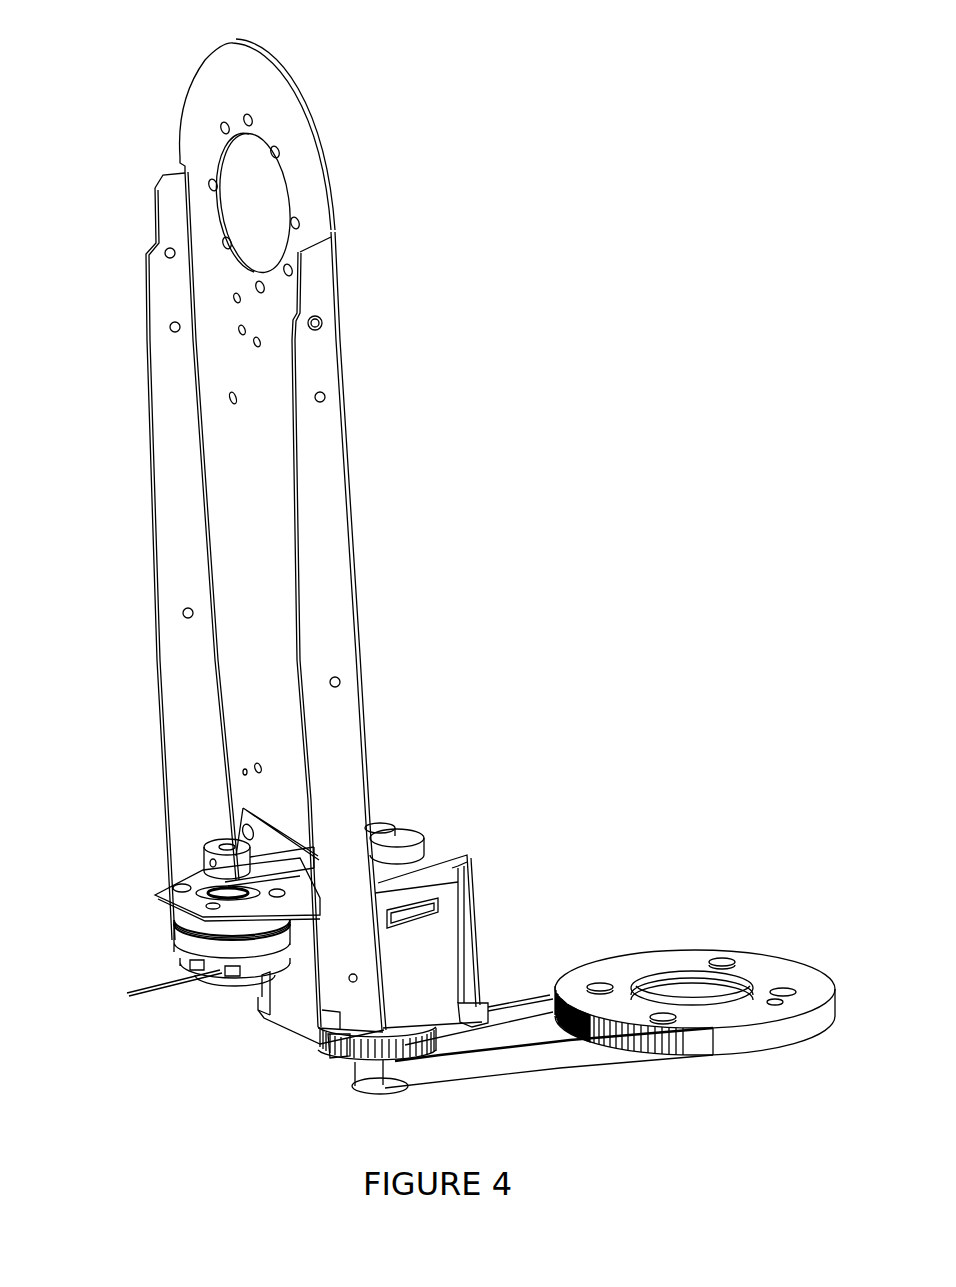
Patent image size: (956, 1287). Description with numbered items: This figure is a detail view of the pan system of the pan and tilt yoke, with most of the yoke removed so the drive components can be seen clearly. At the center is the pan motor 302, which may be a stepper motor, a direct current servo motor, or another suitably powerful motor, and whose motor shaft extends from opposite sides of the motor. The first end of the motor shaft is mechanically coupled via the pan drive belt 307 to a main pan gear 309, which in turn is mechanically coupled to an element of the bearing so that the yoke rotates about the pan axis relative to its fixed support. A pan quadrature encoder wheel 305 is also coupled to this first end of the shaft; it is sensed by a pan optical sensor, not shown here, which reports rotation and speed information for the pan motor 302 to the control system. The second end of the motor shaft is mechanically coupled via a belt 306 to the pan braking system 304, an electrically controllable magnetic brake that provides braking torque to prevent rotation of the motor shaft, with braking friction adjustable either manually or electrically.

The pan motor 302 is at (427, 858).
The pan braking system 304 is at (173, 936).
The pan quadrature encoder wheel 305 is at (363, 1063).
The belt 306 is at (217, 884).
The pan drive belt 307 is at (517, 1063).
The main pan gear 309 is at (665, 965).